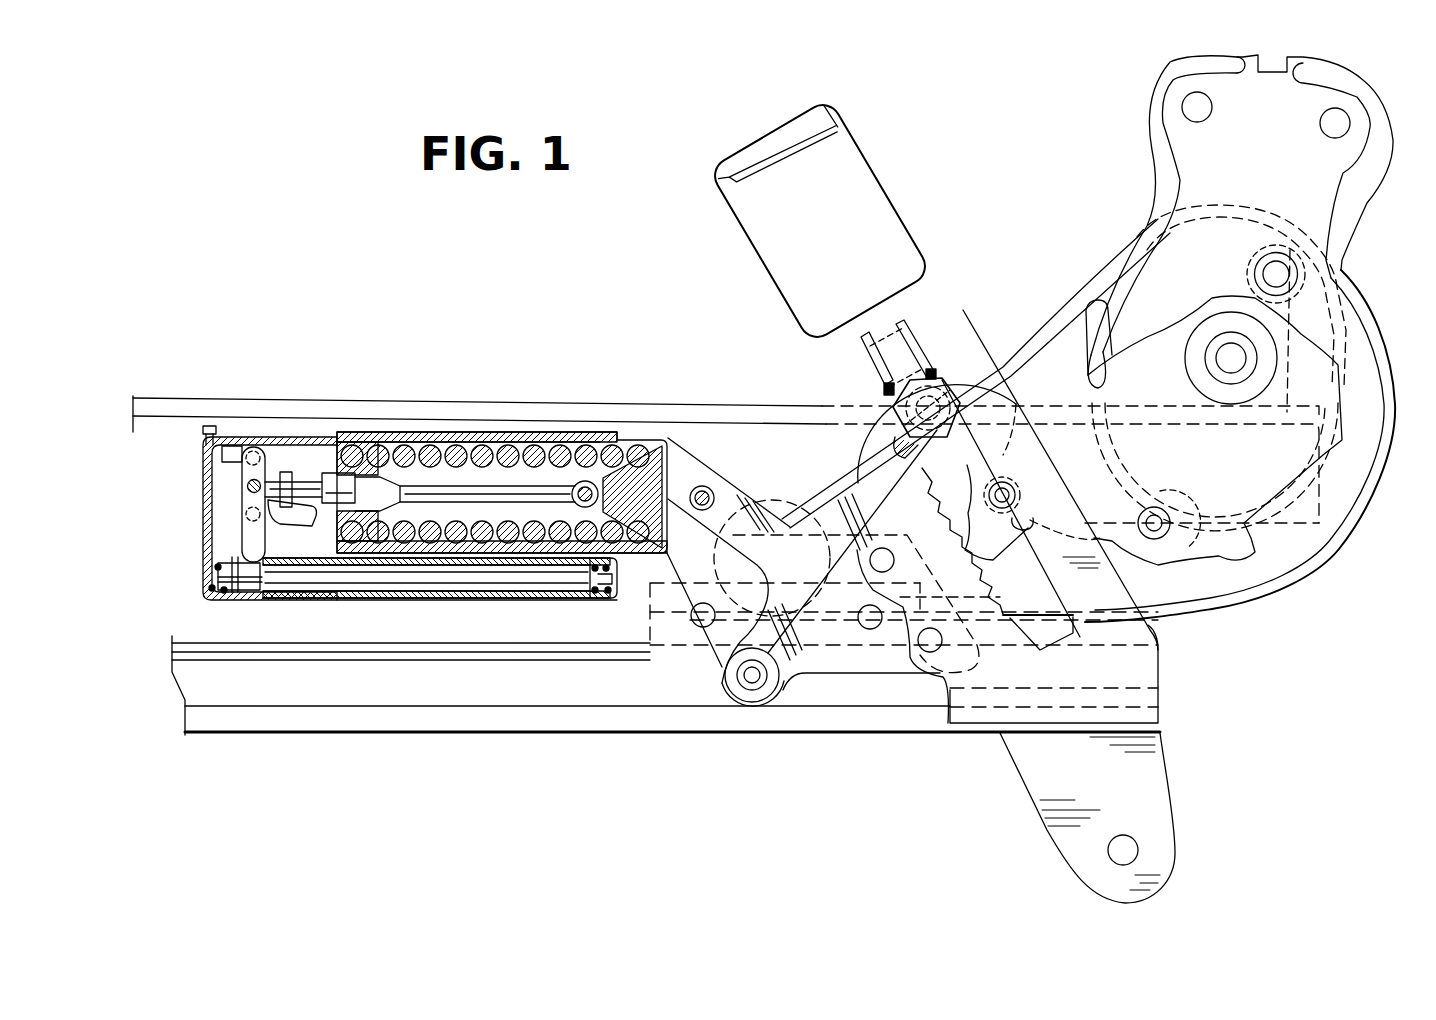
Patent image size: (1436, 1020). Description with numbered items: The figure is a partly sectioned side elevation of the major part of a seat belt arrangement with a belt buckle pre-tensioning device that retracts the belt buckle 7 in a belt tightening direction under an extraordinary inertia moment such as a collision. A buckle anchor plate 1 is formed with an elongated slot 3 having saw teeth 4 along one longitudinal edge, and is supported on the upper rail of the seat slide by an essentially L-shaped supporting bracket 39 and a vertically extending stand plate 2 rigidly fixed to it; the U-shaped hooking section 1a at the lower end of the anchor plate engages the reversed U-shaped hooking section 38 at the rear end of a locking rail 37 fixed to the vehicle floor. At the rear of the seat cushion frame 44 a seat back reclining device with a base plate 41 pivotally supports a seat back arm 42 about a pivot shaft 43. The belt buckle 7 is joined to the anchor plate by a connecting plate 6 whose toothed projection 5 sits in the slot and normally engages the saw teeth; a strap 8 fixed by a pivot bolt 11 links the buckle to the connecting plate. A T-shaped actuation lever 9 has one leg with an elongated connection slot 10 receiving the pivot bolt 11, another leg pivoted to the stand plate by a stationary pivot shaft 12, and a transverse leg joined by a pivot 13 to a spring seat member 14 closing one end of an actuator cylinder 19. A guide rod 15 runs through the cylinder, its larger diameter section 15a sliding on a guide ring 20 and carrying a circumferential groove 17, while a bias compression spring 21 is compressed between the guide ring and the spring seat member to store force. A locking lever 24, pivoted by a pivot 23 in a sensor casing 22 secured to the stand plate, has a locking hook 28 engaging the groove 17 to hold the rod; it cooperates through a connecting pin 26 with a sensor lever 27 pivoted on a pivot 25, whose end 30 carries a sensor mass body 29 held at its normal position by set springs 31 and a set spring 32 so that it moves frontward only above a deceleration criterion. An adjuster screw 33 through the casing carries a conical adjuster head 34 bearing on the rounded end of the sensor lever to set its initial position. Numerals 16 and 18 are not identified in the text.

The buckle anchor plate 1 is at (1040, 480).
The U-shaped hooking section 1a is at (1140, 694).
The stand plate 2 is at (660, 613).
The elongated slot 3 is at (1020, 528).
The saw teeth 4 is at (938, 495).
The toothed projection 5 is at (887, 407).
The connecting plate 6 is at (998, 372).
The belt buckle 7 is at (878, 233).
The strap 8 is at (925, 322).
The actuation lever 9 is at (803, 603).
The elongated connection slot 10 is at (902, 442).
The pivot bolt 11 is at (933, 400).
The pivot shaft 12 is at (750, 680).
The pivot 13 is at (703, 486).
The spring seat member 14 is at (667, 470).
The guide rod 15 is at (510, 490).
The larger diameter section 15a is at (372, 470).
The cylinder end cap 16 is at (614, 448).
The circumferential groove 17 is at (310, 480).
The cylinder wall 18 is at (478, 436).
The actuator cylinder 19 is at (578, 448).
The guide ring 20 is at (362, 545).
The bias compression spring 21 is at (460, 545).
The sensor casing 22 is at (257, 602).
The pivot 23 is at (245, 518).
The locking lever 24 is at (287, 602).
The pivot 25 is at (247, 486).
The connecting pin 26 is at (253, 451).
The sensor lever 27 is at (248, 540).
The locking hook 28 is at (278, 526).
The sensor mass body 29 is at (412, 580).
The end 30 is at (250, 553).
The set springs 31 is at (212, 596).
The set spring 32 is at (238, 602).
The adjuster screw 33 is at (210, 427).
The conical adjuster head 34 is at (226, 455).
The locking rail 37 is at (855, 720).
The reversed U-shaped hooking section 38 is at (905, 695).
The supporting bracket 39 is at (653, 650).
The base plate 41 is at (1103, 263).
The seat back arm 42 is at (1185, 105).
The pivot shaft 43 is at (1235, 352).
The seat cushion frame 44 is at (760, 410).